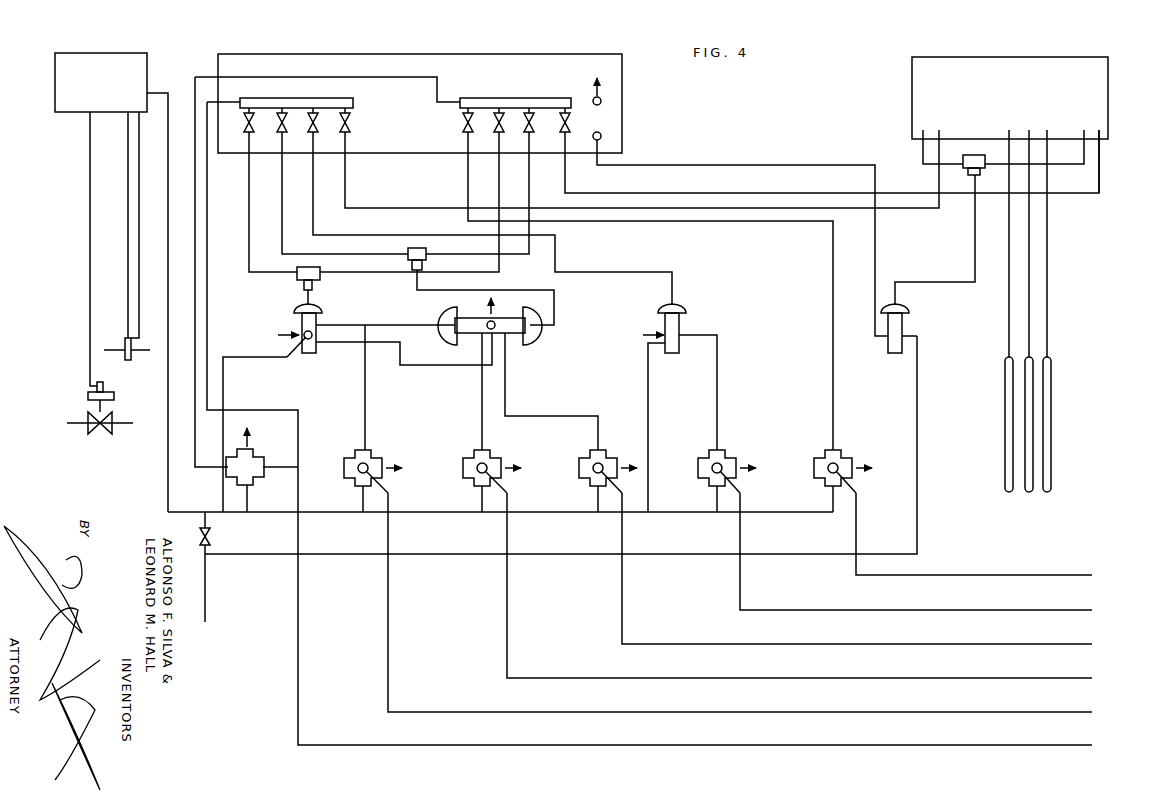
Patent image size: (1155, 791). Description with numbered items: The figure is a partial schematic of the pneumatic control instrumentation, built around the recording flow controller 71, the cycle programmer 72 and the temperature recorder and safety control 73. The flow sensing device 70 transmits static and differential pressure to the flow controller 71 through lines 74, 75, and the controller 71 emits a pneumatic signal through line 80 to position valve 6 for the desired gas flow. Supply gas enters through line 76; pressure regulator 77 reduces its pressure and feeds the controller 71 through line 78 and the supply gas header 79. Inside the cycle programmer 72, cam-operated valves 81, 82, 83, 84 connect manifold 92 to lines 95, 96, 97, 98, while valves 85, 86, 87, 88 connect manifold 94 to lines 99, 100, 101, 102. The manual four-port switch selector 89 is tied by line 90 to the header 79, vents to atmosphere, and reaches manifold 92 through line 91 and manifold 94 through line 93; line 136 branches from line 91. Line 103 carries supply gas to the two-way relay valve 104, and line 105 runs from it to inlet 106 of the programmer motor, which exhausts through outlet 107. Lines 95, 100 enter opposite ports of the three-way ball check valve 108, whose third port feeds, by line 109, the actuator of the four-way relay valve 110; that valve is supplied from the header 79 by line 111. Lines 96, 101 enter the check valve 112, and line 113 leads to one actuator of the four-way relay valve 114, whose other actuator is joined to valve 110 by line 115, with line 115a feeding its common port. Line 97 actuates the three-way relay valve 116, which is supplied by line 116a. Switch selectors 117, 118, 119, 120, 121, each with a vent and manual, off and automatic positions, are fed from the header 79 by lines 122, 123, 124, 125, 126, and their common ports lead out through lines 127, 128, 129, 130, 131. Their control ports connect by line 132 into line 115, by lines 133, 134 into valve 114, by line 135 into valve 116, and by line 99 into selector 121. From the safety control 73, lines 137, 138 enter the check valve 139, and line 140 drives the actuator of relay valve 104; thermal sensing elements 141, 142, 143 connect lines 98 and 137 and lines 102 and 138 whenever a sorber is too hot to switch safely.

The valve 6 is at (90, 394).
The flow sensing device 70 is at (128, 360).
The recording flow controller 71 is at (100, 84).
The cycle programmer 72 is at (363, 55).
The temperature recorder and safety control 73 is at (912, 91).
The line 74 is at (133, 296).
The line 75 is at (128, 296).
The line 76 is at (206, 601).
The pressure regulator 77 is at (210, 538).
The line 78 is at (168, 228).
The supply gas header 79 is at (291, 513).
The line 80 is at (90, 358).
The valve 81 is at (246, 133).
The valve 82 is at (279, 133).
The valve 83 is at (311, 133).
The valve 84 is at (343, 133).
The valve 85 is at (462, 135).
The valve 86 is at (496, 133).
The valve 87 is at (527, 133).
The valve 88 is at (563, 133).
The switch selector 89 is at (252, 449).
The line 90 is at (250, 498).
The line 91 is at (226, 101).
The manifold 92 is at (347, 98).
The line 93 is at (252, 77).
The manifold 94 is at (497, 98).
The line 95 is at (249, 191).
The line 96 is at (282, 191).
The line 97 is at (313, 191).
The line 98 is at (345, 206).
The line 99 is at (468, 186).
The line 100 is at (499, 186).
The line 101 is at (529, 186).
The line 102 is at (652, 194).
The line 103 is at (917, 391).
The two-way pneumatic relay valve 104 is at (908, 318).
The line 105 is at (646, 166).
The inlet 106 is at (602, 134).
The outlet 107 is at (602, 99).
The three-way ball check valve 108 is at (313, 283).
The line 109 is at (294, 305).
The four-way pneumatic relay valve 110 is at (300, 328).
The line 111 is at (223, 498).
The three-way ball check valve 112 is at (408, 254).
The line 113 is at (556, 322).
The four-way pneumatic relay valve 114 is at (493, 310).
The line 115 is at (398, 325).
The line 115a is at (440, 366).
The three-way pneumatic relay valve 116 is at (684, 306).
The line 116a is at (648, 374).
The switch selector 117 is at (373, 456).
The switch selector 118 is at (492, 456).
The switch selector 119 is at (586, 458).
The switch selector 120 is at (727, 456).
The switch selector 121 is at (843, 457).
The line 122 is at (363, 501).
The line 123 is at (482, 501).
The line 124 is at (598, 501).
The line 125 is at (717, 501).
The line 126 is at (833, 501).
The line 127 is at (384, 490).
The line 128 is at (503, 490).
The line 129 is at (618, 490).
The line 130 is at (744, 490).
The line 131 is at (862, 489).
The line 132 is at (365, 376).
The line 133 is at (482, 406).
The line 134 is at (505, 386).
The line 135 is at (720, 352).
The line 136 is at (300, 482).
The line 137 is at (923, 153).
The line 138 is at (1100, 153).
The three-way ball check valve 139 is at (963, 156).
The line 140 is at (961, 280).
The thermal sensing element 141 is at (1004, 494).
The thermal sensing element 142 is at (1028, 496).
The thermal sensing element 143 is at (1048, 496).